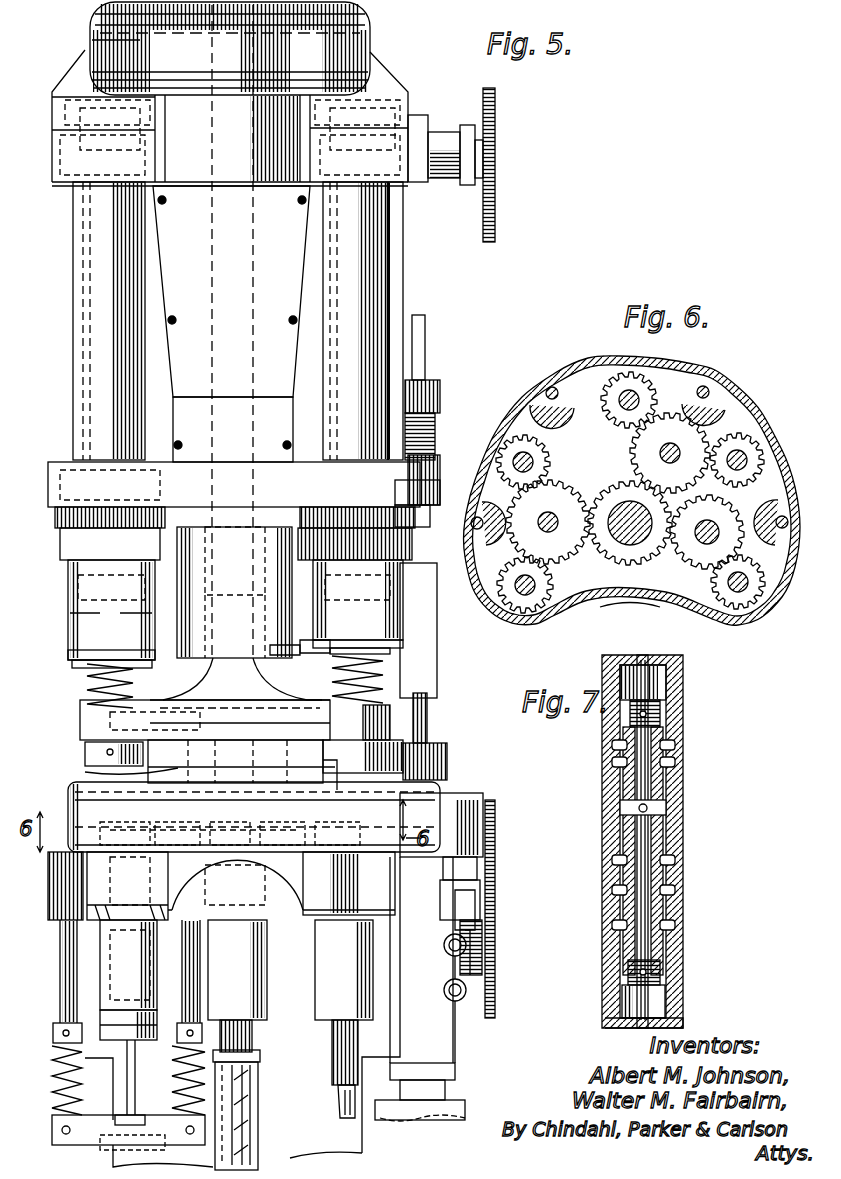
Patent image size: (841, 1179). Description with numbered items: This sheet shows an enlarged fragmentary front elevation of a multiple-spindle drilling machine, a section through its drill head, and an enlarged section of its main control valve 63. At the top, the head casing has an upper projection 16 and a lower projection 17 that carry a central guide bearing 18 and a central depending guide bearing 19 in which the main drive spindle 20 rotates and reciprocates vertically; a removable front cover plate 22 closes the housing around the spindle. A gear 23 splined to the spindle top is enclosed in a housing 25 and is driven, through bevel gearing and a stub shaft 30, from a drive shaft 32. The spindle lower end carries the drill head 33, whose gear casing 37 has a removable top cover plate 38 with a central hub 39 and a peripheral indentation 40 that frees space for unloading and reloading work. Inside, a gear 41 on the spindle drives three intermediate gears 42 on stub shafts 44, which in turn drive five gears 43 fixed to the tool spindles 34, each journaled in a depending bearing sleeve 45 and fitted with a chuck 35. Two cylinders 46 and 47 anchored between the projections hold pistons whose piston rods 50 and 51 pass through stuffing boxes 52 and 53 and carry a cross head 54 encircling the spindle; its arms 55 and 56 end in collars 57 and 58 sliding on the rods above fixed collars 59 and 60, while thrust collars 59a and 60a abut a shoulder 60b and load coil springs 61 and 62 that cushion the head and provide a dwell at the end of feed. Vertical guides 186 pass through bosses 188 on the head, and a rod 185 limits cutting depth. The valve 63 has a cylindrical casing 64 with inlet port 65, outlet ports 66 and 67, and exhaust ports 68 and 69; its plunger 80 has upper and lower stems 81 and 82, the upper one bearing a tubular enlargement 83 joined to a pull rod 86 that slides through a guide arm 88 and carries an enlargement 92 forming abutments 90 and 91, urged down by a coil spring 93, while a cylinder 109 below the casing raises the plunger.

In FIG. 5, the upper projection 16 is at (380, 80).
In FIG. 5, the lower projection 17 is at (100, 490).
In FIG. 5, the central guide bearing 18 is at (192, 165).
In FIG. 5, the central depending guide bearing 19 is at (282, 656).
In FIG. 5, the main drive spindle 20 is at (245, 255).
In FIG. 5, the removable front cover plate 22 is at (270, 402).
In FIG. 5, the gear 23 is at (345, 42).
In FIG. 5, the housing 25 is at (90, 40).
In FIG. 5, the stub shaft 30 is at (340, 1108).
In FIG. 5, the drive shaft 32 is at (498, 170).
In FIG. 5, the drill head 33 is at (59, 813).
In FIG. 5, the tool spindles 34 is at (152, 995).
In FIG. 6, the tool spindles 34 is at (642, 400).
In FIG. 5, the chuck 35 is at (358, 1065).
In FIG. 5, the gear casing 37 is at (440, 818).
In FIG. 6, the gear casing 37 is at (752, 412).
In FIG. 5, the removable top cover plate 38 is at (405, 790).
In FIG. 5, the central hub 39 is at (116, 771).
In FIG. 6, the indentation 40 is at (660, 604).
In FIG. 6, the gear 41 is at (613, 556).
In FIG. 6, the intermediate gears 42 is at (655, 450).
In FIG. 6, the gears 43 is at (540, 440).
In FIG. 5, the stub shafts 44 is at (140, 822).
In FIG. 6, the stub shafts 44 is at (555, 515).
In FIG. 5, the depending bearing sleeves 45 is at (282, 912).
In FIG. 5, the cylinder 46 is at (100, 326).
In FIG. 5, the cylinder 47 is at (365, 270).
In FIG. 5, the piston rod 50 is at (88, 670).
In FIG. 5, the piston rod 51 is at (390, 655).
In FIG. 5, the stuffing box 52 is at (72, 620).
In FIG. 5, the stuffing box 53 is at (358, 628).
In FIG. 5, the cross head 54 is at (210, 698).
In FIG. 5, the arm 55 is at (165, 700).
In FIG. 5, the arm 56 is at (315, 655).
In FIG. 5, the collar 57 is at (82, 718).
In FIG. 5, the collar 58 is at (390, 712).
In FIG. 5, the collar 59 is at (86, 752).
In FIG. 5, the thrust collar 59a is at (70, 655).
In FIG. 5, the collar 60 is at (345, 750).
In FIG. 5, the thrust collar 60a is at (400, 646).
In FIG. 5, the shoulder 60b is at (305, 655).
In FIG. 5, the coil spring 61 is at (88, 697).
In FIG. 5, the coil spring 62 is at (383, 690).
In FIG. 5, the main control valve 63 is at (415, 875).
In FIG. 7, the main control valve 63 is at (699, 830).
In FIG. 7, the cylindrical casing 64 is at (682, 800).
In FIG. 7, the inlet port 65 is at (684, 892).
In FIG. 7, the outlet port 66 is at (684, 858).
In FIG. 7, the outlet port 67 is at (684, 926).
In FIG. 7, the exhaust port 68 is at (666, 728).
In FIG. 7, the exhaust port 69 is at (682, 775).
In FIG. 7, the valve plunger 80 is at (632, 835).
In FIG. 5, the upper valve stem 81 is at (428, 722).
In FIG. 7, the upper valve stem 81 is at (645, 683).
In FIG. 7, the lower valve stem 82 is at (650, 997).
In FIG. 5, the tubular enlargement 83 is at (425, 598).
In FIG. 5, the pull rod 86 is at (424, 345).
In FIG. 5, the guide arm 88 is at (442, 392).
In FIG. 5, the upper abutment 90 is at (440, 500).
In FIG. 5, the lower abutment 91 is at (428, 512).
In FIG. 5, the enlargement 92 is at (442, 470).
In FIG. 5, the coil spring 93 is at (434, 430).
In FIG. 5, the cylinder 109 is at (420, 1112).
In FIG. 5, the rod 185 is at (260, 1100).
In FIG. 5, the vertical guides 186 is at (452, 882).
In FIG. 5, the bosses 188 is at (470, 828).